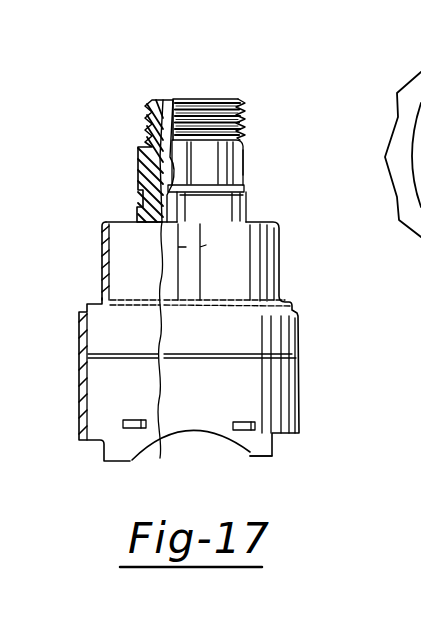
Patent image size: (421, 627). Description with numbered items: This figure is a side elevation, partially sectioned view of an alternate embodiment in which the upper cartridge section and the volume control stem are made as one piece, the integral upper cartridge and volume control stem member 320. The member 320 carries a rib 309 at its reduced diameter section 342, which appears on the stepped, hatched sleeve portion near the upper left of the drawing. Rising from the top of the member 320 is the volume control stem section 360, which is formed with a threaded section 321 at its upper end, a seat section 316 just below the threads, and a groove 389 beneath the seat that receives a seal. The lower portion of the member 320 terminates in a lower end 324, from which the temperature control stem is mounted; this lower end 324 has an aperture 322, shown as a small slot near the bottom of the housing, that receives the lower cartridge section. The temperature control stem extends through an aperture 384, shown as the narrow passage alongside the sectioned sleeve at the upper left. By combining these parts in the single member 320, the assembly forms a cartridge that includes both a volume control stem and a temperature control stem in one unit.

The rib 309 is at (185, 247).
The seat section 316 is at (246, 152).
The integral upper cartridge and volume control stem member 320 is at (288, 263).
The threaded section 321 is at (242, 100).
The aperture 322 is at (240, 420).
The lower end 324 is at (252, 447).
The reduced diameter section 342 is at (100, 280).
The volume control stem section 360 is at (245, 172).
The aperture 384 is at (172, 99).
The groove 389 is at (250, 205).